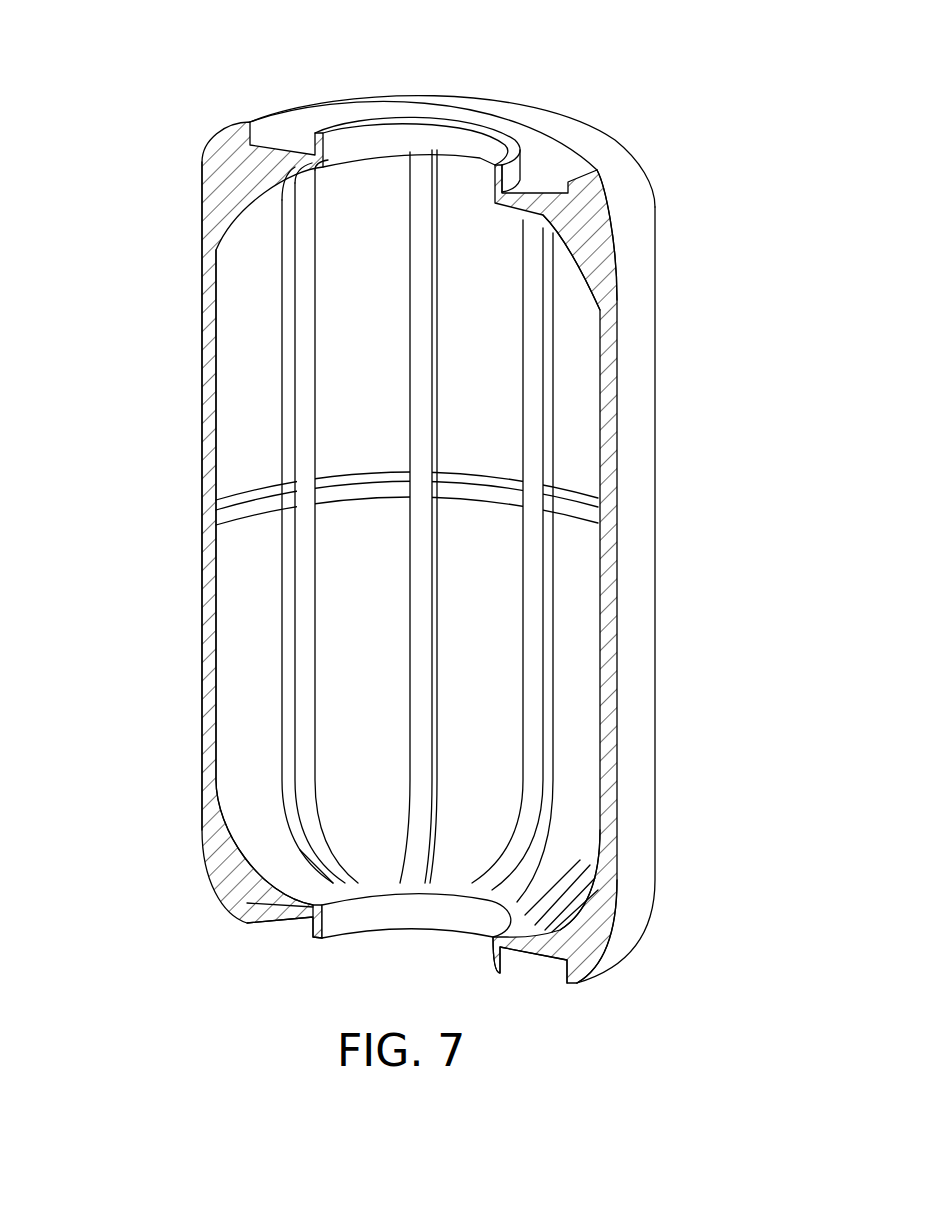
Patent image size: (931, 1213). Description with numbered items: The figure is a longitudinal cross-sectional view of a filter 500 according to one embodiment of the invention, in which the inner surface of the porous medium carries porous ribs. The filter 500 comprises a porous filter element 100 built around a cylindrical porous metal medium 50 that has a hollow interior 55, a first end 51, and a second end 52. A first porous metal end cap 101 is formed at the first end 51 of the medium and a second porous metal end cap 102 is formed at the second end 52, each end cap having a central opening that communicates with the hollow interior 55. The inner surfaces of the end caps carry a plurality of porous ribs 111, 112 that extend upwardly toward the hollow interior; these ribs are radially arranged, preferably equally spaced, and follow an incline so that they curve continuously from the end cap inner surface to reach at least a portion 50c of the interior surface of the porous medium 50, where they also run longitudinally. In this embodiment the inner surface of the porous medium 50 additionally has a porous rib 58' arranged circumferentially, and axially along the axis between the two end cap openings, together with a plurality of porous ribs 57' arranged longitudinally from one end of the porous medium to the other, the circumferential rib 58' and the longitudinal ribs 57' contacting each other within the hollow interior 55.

The filter 500 is at (120, 85).
The porous filter element 100 is at (424, 539).
The cylindrical porous metal medium 50 is at (606, 324).
The portion of the interior surface of the porous medium 50c is at (263, 808).
The first end 51 is at (615, 278).
The second end 52 is at (610, 838).
The hollow interior 55 is at (337, 414).
The longitudinally arranged porous ribs 57' is at (618, 561).
The circumferentially arranged porous rib 58' is at (490, 530).
The first porous metal end cap 101 is at (583, 205).
The second porous metal end cap 102 is at (578, 940).
The porous ribs 111 is at (577, 867).
The porous ribs 112 is at (302, 203).